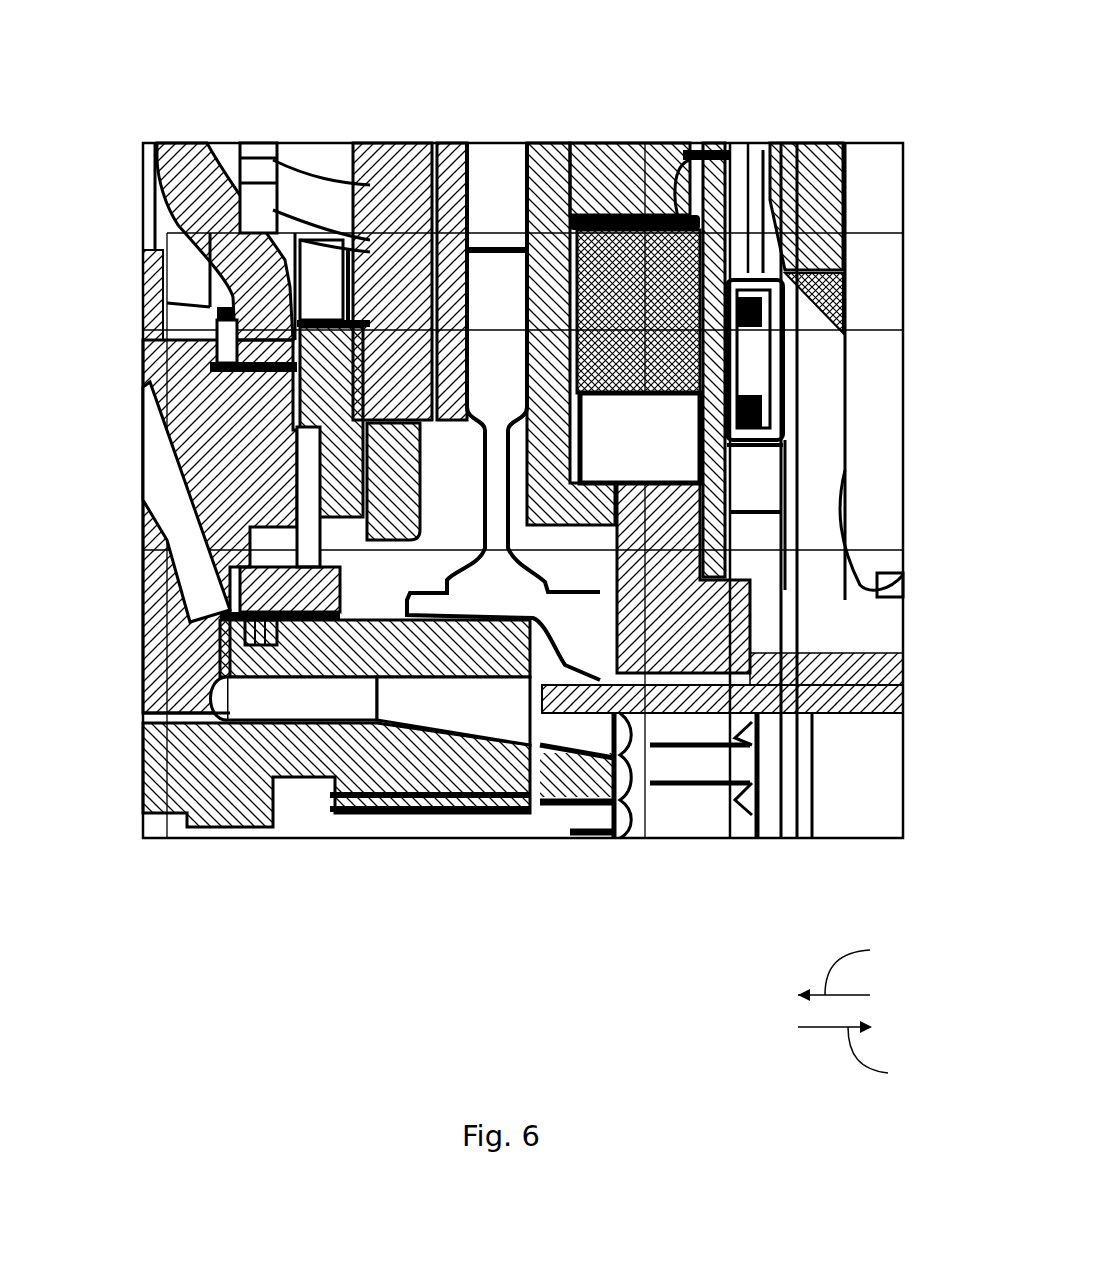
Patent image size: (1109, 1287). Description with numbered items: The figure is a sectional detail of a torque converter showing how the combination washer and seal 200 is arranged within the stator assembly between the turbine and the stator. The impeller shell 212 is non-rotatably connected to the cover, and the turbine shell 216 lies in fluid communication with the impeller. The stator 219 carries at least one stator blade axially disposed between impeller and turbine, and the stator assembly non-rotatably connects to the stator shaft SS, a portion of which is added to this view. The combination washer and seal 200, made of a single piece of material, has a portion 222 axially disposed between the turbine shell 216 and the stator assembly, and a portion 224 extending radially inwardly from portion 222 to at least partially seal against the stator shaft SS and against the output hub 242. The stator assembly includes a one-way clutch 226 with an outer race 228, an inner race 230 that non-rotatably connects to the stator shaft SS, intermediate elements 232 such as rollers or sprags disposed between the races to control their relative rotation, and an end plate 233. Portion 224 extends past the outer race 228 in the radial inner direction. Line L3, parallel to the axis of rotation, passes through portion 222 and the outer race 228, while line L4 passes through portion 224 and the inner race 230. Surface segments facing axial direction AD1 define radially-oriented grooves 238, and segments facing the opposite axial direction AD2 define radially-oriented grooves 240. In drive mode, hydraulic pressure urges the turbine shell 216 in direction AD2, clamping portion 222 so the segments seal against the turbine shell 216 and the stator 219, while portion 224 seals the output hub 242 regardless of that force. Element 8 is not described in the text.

The turbine blade 8 is at (170, 150).
The radially-oriented grooves 238 is at (428, 175).
The portion 222 is at (400, 180).
The turbine shell 216 is at (444, 150).
The combination washer and seal 200 is at (495, 150).
The radially-oriented grooves 240 is at (535, 285).
The stator 219 is at (628, 160).
The outer race 228 is at (667, 215).
The intermediate elements 232 is at (660, 432).
The inner race 230 is at (735, 625).
The stator shaft SS is at (878, 690).
The end plate 233 is at (710, 180).
The impeller shell 212 is at (800, 178).
The line L3 is at (868, 330).
The one-way clutch 226 is at (745, 480).
The portion 224 is at (455, 600).
The output hub 242 is at (188, 800).
The line L4 is at (190, 545).
The axial direction AD1 is at (857, 969).
The axial direction AD2 is at (869, 1057).